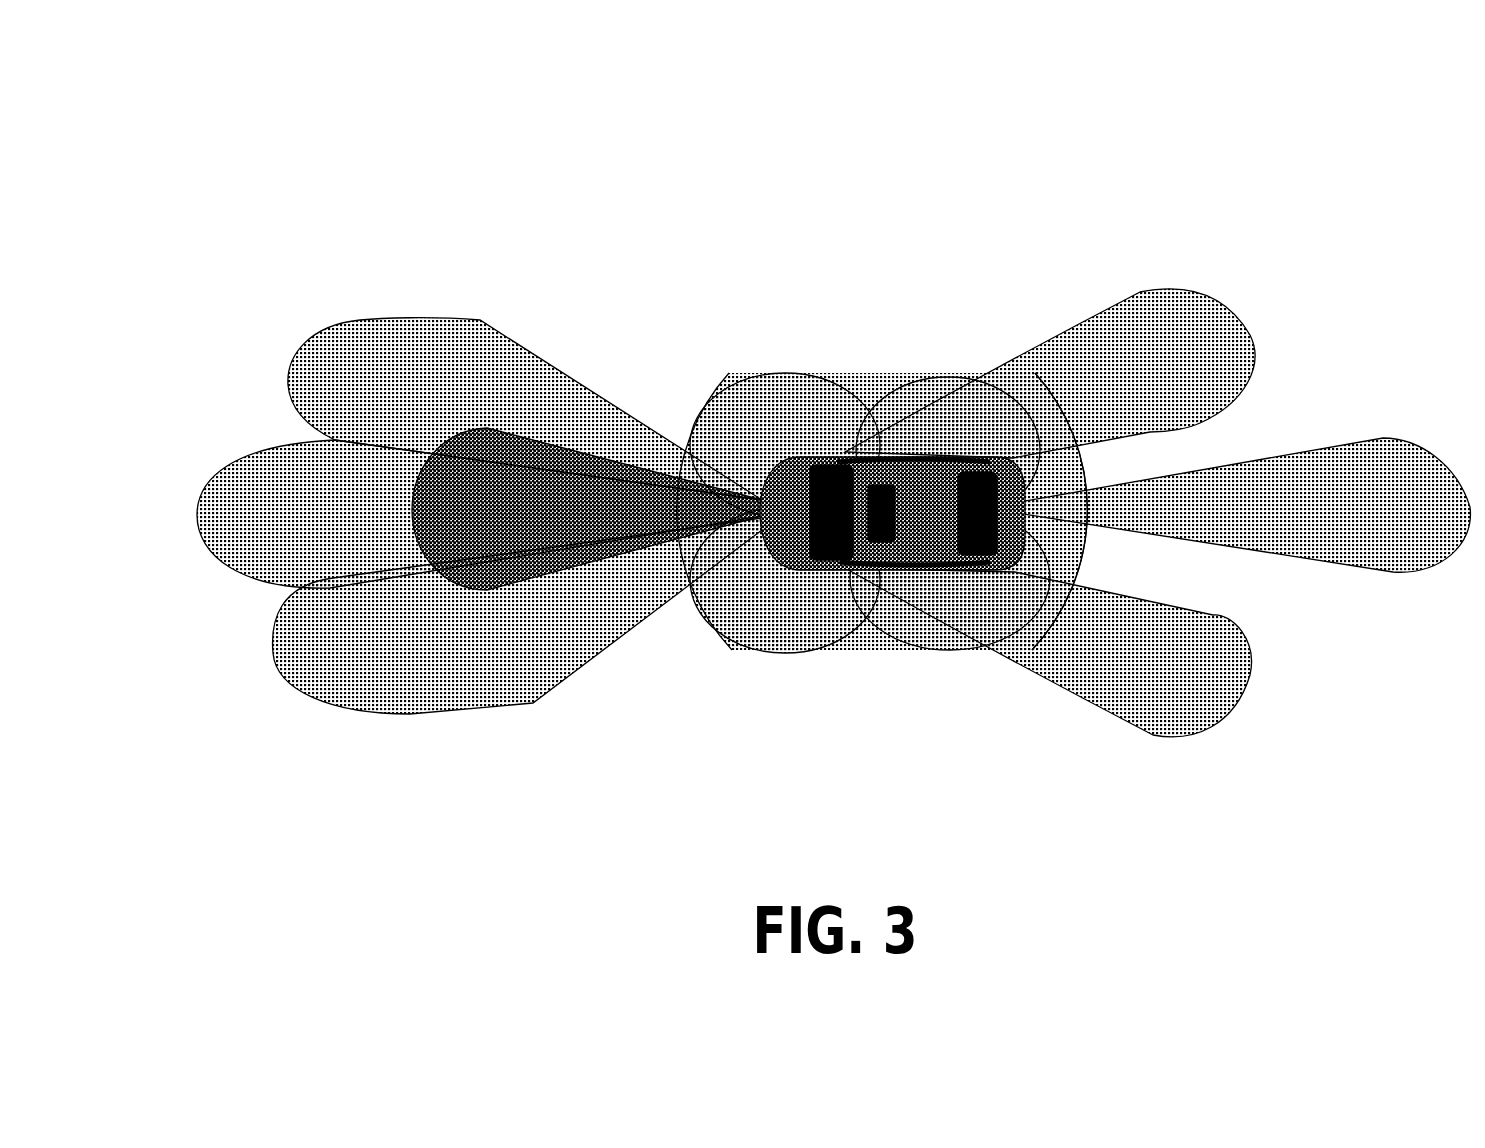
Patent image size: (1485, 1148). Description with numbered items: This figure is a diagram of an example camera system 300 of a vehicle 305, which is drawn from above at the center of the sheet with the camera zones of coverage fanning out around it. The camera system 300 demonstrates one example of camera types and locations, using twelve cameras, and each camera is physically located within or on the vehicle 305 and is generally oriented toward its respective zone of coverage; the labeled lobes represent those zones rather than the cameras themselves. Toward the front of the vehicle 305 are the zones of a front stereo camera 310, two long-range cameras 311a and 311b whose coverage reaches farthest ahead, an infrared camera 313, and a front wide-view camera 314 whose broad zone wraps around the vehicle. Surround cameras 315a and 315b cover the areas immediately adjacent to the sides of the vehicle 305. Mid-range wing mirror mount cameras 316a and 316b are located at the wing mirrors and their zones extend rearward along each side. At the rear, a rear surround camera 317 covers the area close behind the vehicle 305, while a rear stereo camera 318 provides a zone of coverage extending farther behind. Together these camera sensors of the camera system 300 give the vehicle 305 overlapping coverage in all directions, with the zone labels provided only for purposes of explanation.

The camera system 300 is at (265, 237).
The vehicle 305 is at (765, 460).
The front stereo camera 310 is at (226, 482).
The long-range camera 311a is at (318, 336).
The long-range camera 311b is at (360, 710).
The infrared camera 313 is at (505, 428).
The front wide-view camera 314 is at (687, 590).
The surround camera 315a is at (797, 372).
The surround camera 315b is at (923, 650).
The mid-range wing mirror mount camera 316a is at (1138, 290).
The mid-range wing mirror mount camera 316b is at (1063, 693).
The rear surround camera 317 is at (1095, 530).
The rear stereo camera 318 is at (1420, 452).